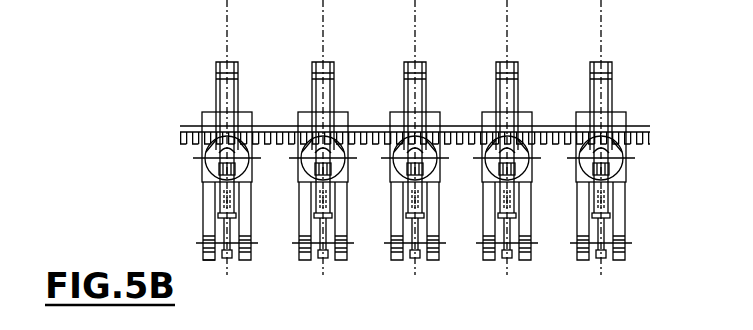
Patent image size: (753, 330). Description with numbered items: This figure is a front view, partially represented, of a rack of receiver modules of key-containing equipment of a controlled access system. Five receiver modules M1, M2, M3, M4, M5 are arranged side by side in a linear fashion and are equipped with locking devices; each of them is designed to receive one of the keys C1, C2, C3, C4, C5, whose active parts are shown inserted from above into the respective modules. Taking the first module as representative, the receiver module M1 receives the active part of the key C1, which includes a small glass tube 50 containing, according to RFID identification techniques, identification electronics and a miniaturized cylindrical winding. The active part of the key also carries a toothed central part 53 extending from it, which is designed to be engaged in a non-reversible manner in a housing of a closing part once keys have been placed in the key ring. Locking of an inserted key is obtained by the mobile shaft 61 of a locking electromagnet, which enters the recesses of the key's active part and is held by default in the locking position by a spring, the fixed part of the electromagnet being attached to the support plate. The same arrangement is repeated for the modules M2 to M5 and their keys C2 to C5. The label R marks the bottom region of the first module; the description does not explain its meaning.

The key C1 is at (228, 58).
The key C2 is at (323, 58).
The key C3 is at (415, 58).
The key C4 is at (508, 58).
The key C5 is at (601, 58).
The receiver module M1 is at (216, 183).
The receiver module M2 is at (350, 108).
The receiver module M3 is at (442, 108).
The receiver module M4 is at (535, 108).
The receiver module M5 is at (629, 108).
The toothed central part 53 is at (215, 100).
The mobile shaft 61 is at (215, 169).
The small glass tube 50 is at (215, 200).
The rail R is at (207, 246).